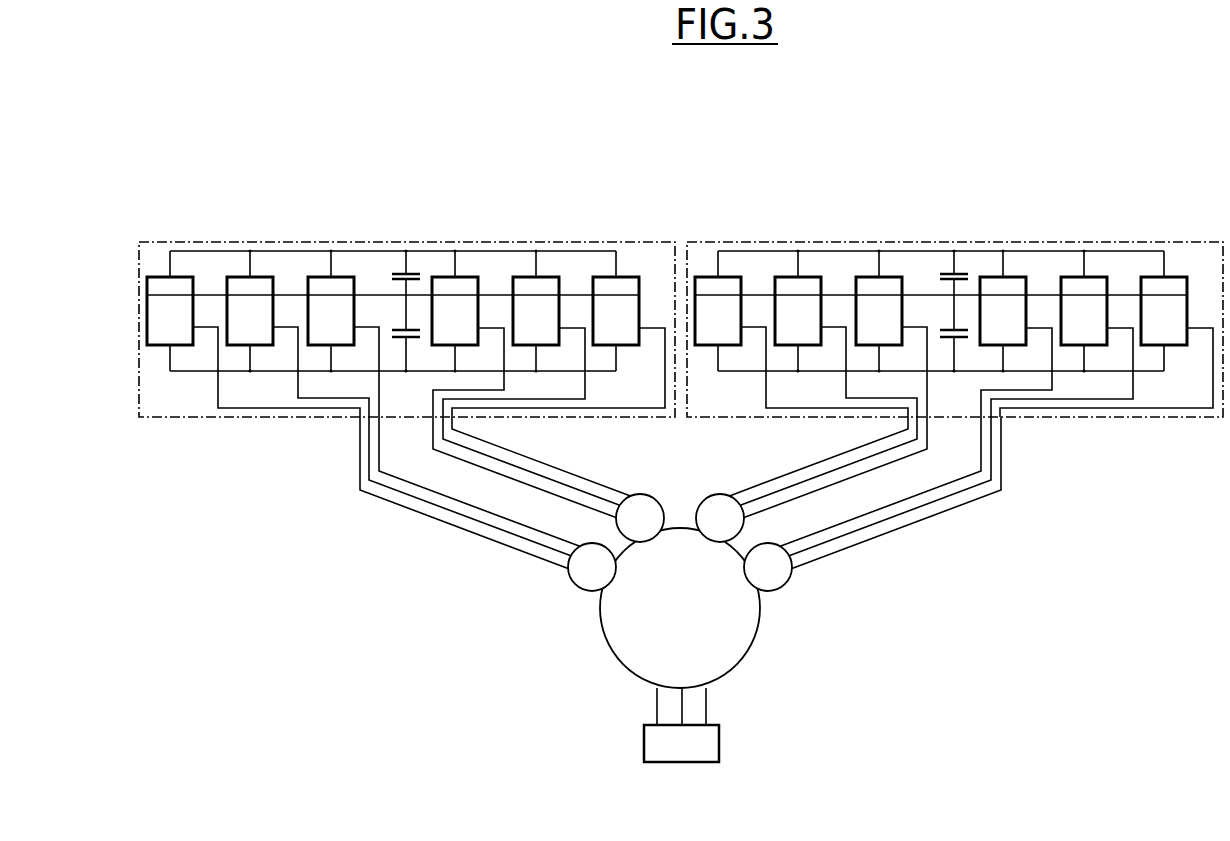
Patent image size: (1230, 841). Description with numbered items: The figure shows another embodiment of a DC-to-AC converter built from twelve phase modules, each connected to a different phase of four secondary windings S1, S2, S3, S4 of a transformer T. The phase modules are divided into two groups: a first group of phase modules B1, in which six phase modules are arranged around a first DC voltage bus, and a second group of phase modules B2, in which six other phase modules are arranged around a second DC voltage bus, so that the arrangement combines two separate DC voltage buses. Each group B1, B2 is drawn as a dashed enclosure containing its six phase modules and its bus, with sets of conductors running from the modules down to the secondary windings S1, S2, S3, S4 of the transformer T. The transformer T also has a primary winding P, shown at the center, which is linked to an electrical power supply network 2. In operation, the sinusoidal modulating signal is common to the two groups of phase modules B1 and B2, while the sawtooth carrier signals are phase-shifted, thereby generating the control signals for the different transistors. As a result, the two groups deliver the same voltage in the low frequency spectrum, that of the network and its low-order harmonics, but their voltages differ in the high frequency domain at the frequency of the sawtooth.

The first group of phase modules B1 is at (407, 242).
The second group of phase modules B2 is at (955, 242).
The first secondary winding S1 is at (592, 567).
The second secondary winding S2 is at (640, 518).
The third secondary winding S3 is at (720, 518).
The fourth secondary winding S4 is at (768, 567).
The primary winding P is at (680, 608).
The transformer T is at (582, 614).
The electrical power supply network 2 is at (681, 743).